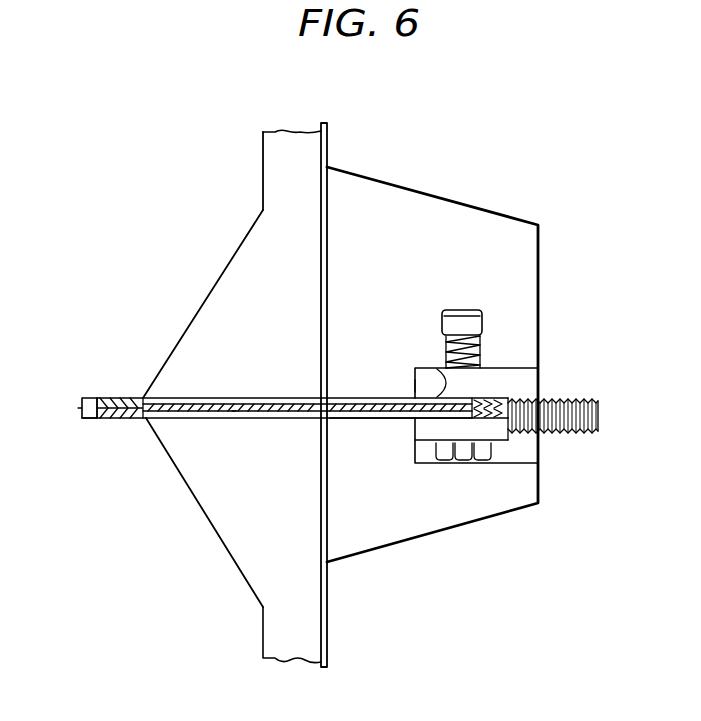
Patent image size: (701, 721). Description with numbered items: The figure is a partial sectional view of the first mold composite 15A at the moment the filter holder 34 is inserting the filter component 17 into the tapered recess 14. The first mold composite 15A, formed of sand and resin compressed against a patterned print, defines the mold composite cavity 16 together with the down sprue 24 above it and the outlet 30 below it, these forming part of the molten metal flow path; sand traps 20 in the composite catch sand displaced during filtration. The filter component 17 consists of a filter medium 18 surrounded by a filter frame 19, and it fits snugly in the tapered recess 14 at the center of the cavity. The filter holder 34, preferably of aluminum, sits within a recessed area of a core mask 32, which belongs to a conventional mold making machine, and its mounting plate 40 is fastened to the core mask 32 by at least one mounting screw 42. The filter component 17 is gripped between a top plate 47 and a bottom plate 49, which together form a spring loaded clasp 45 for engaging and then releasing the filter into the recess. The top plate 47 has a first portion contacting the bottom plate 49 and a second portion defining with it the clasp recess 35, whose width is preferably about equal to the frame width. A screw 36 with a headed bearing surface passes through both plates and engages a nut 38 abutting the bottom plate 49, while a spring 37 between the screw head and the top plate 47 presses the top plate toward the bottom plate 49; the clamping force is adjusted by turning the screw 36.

The tapered recess 14 is at (286, 398).
The first mold composite 15A is at (189, 326).
The mold composite cavity 16 is at (307, 293).
The filter component 17 is at (234, 419).
The filter medium 18 is at (206, 398).
The filter frame 19 is at (118, 420).
The sand traps 20 is at (82, 408).
The down sprue 24 is at (307, 181).
The outlet 30 is at (307, 648).
The core mask 32 is at (440, 197).
The filter holder 34 is at (514, 369).
The clasp recess 35 is at (386, 419).
The screw 36 is at (482, 322).
The spring 37 is at (482, 350).
The nut 38 is at (481, 452).
The mounting plate 40 is at (538, 453).
The mounting screw 42 is at (600, 416).
The spring loaded clasp 45 is at (415, 393).
The top plate 47 is at (437, 369).
The bottom plate 49 is at (428, 432).